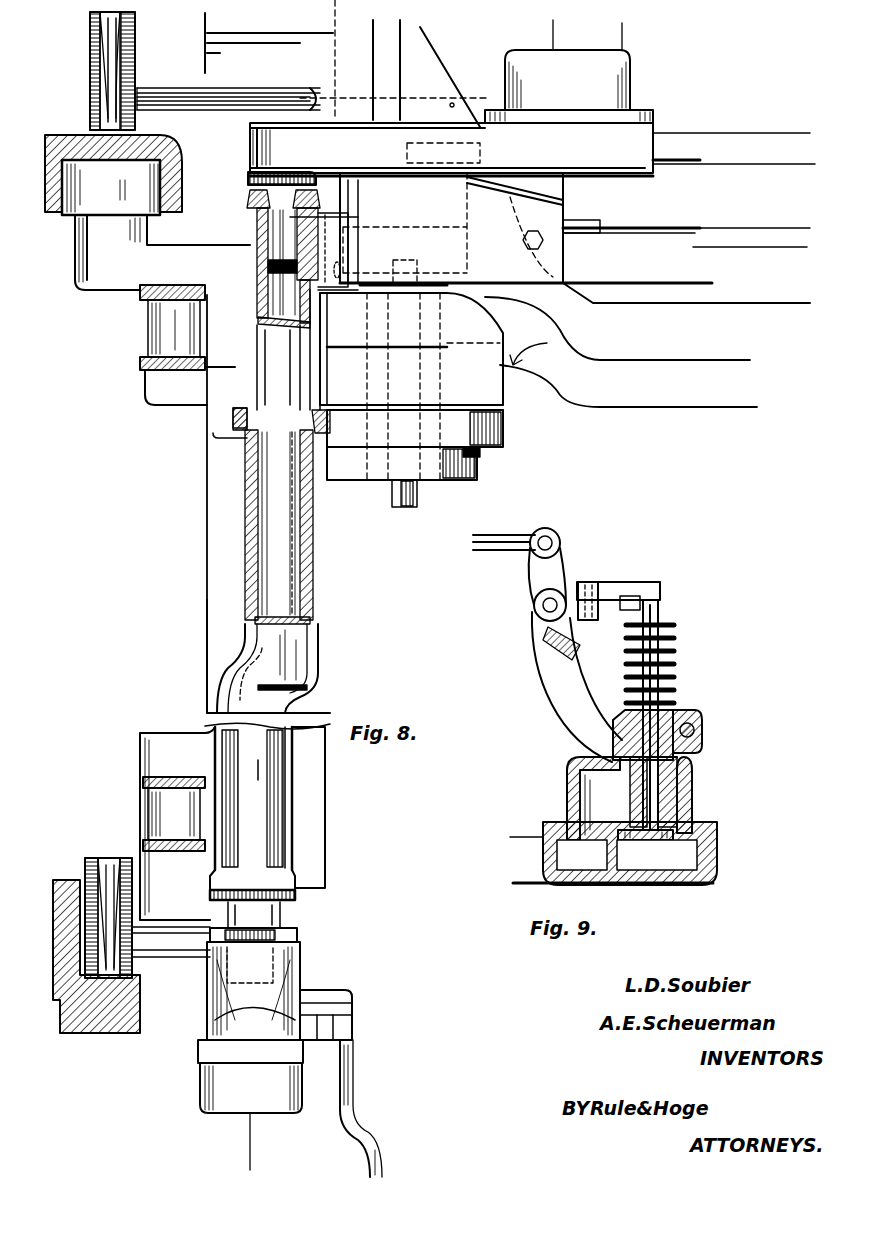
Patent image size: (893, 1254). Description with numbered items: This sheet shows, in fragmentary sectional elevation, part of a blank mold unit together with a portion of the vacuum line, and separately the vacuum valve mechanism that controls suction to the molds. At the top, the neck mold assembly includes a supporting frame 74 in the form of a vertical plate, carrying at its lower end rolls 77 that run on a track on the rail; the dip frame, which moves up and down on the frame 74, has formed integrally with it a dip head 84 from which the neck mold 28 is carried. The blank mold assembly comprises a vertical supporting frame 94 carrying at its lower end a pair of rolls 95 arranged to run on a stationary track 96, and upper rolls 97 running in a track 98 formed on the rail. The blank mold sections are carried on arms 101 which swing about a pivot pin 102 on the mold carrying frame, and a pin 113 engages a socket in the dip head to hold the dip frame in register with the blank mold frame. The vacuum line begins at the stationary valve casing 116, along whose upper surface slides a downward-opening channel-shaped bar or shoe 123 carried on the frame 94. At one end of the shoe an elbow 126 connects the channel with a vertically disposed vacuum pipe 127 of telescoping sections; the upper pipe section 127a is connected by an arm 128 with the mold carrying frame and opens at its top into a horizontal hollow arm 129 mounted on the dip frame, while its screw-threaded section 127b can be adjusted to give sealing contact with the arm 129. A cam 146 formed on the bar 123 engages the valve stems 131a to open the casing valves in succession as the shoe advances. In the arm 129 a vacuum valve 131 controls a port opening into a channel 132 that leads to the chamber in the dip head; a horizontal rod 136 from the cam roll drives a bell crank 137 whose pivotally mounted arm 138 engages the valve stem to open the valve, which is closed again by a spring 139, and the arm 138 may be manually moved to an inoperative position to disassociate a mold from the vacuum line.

In FIG. 8, the neck mold 28 is at (790, 298).
In FIG. 8, the supporting frame 74 is at (358, 83).
In FIG. 8, the rolls 77 is at (97, 50).
In FIG. 8, the dip head 84 is at (772, 178).
In FIG. 8, the vertical supporting frame 94 is at (220, 635).
In FIG. 8, the rolls 95 is at (92, 858).
In FIG. 8, the stationary track 96 is at (85, 1030).
In FIG. 8, the upper rolls 97 is at (135, 180).
In FIG. 8, the track 98 is at (70, 140).
In FIG. 8, the arms 101 is at (693, 407).
In FIG. 8, the pivot pin 102 is at (368, 482).
In FIG. 8, the pin 113 is at (415, 262).
In FIG. 8, the valve casing 116 is at (345, 1112).
In FIG. 8, the channel-shaped bar or shoe 123 is at (205, 1008).
In FIG. 8, the elbow 126 is at (295, 945).
In FIG. 8, the vacuum pipe 127 is at (232, 698).
In FIG. 8, the upper pipe section 127a is at (265, 400).
In FIG. 8, the adjustable pipe section 127b is at (252, 203).
In FIG. 8, the arm 128 is at (335, 248).
In FIG. 8, the horizontal hollow arm 129 is at (255, 130).
In FIG. 9, the horizontal hollow arm 129 is at (568, 785).
In FIG. 8, the vacuum valve 131 is at (610, 88).
In FIG. 9, the vacuum valve 131 is at (665, 820).
In FIG. 8, the valve stem 131a is at (340, 1022).
In FIG. 9, the valve stem 131a is at (660, 607).
In FIG. 9, the channel 132 is at (680, 857).
In FIG. 9, the horizontal rod 136 is at (505, 535).
In FIG. 9, the bell crank 137 is at (553, 578).
In FIG. 9, the arm 138 is at (632, 583).
In FIG. 9, the spring 139 is at (675, 662).
In FIG. 8, the cam 146 is at (340, 1003).